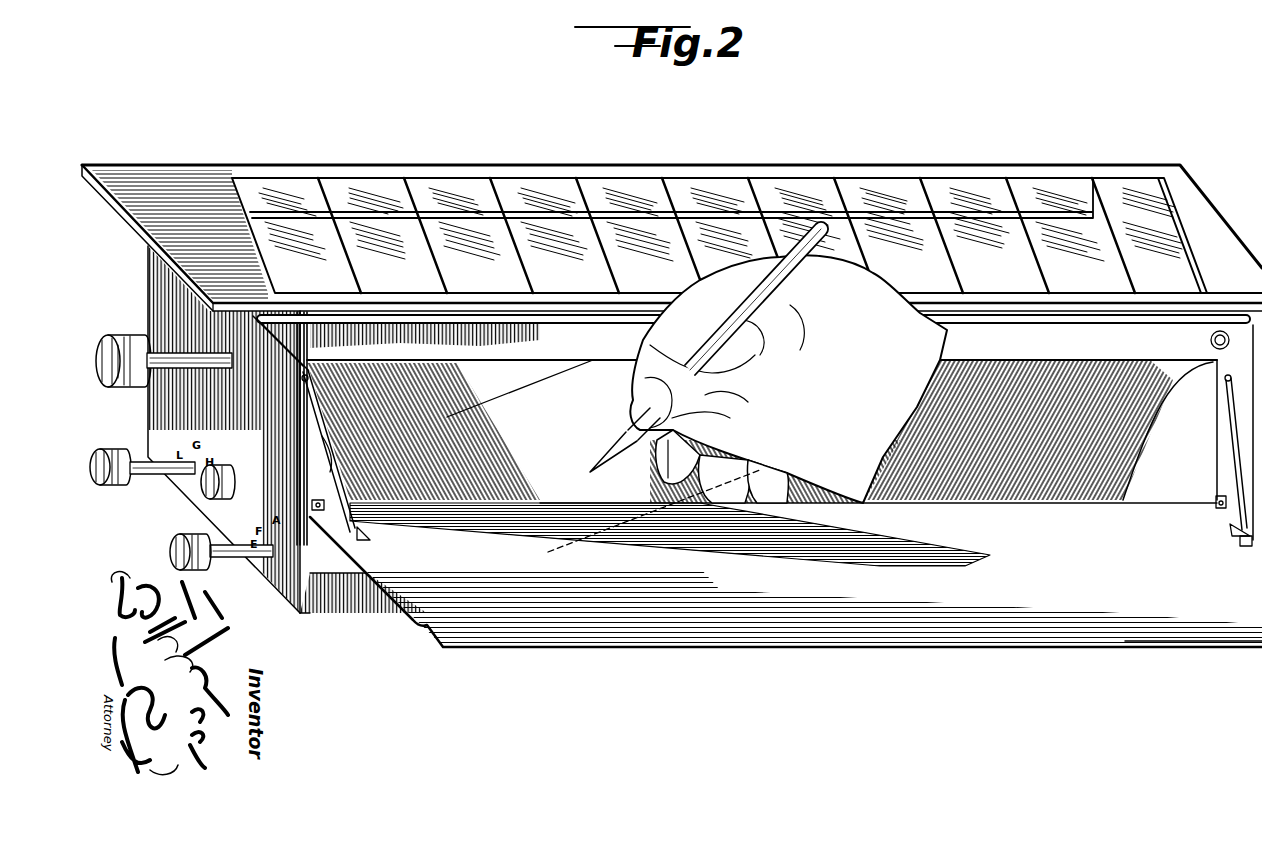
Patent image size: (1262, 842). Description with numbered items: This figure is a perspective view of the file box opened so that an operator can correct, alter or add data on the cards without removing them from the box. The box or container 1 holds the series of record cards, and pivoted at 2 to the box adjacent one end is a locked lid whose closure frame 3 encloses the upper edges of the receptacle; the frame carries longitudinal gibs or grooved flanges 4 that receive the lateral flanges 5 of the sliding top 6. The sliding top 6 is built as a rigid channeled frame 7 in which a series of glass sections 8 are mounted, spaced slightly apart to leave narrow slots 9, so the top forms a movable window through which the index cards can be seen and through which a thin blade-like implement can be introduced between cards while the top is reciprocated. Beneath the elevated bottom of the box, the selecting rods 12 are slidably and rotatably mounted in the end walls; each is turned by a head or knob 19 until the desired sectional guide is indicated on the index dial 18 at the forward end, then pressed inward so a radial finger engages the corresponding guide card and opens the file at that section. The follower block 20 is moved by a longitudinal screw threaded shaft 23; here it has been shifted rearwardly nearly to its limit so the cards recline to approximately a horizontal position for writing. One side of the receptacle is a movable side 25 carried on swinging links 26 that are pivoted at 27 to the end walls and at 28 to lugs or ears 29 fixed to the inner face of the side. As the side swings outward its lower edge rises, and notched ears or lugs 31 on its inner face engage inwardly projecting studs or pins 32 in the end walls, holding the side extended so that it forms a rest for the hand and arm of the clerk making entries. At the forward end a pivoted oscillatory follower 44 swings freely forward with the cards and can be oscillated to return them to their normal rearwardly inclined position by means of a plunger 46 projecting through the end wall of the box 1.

The box or container 1 is at (154, 300).
The pivot 2 is at (1209, 341).
The closure frame 3 is at (762, 342).
The longitudinal gibs or grooved flanges 4 is at (308, 320).
The lateral flanges 5 is at (288, 316).
The sliding top 6 is at (203, 183).
The channeled frame 7 is at (572, 168).
The glass sections 8 is at (640, 190).
The narrow slots 9 is at (760, 190).
The selecting rod 12 is at (147, 478).
The index head or dial 18 is at (193, 446).
The head or knob 19 is at (105, 488).
The follower block 20 is at (1188, 432).
The screw threaded shaft 23 is at (237, 430).
The movable side 25 is at (670, 534).
The swinging links 26 is at (328, 462).
The pivot 27 is at (308, 377).
The pivot 28 is at (1248, 548).
The lugs or ears 29 is at (370, 534).
The notched ears or lugs 31 is at (313, 508).
The studs or pins 32 is at (312, 494).
The oscillatory follower 44 is at (335, 454).
The plunger 46 is at (183, 372).